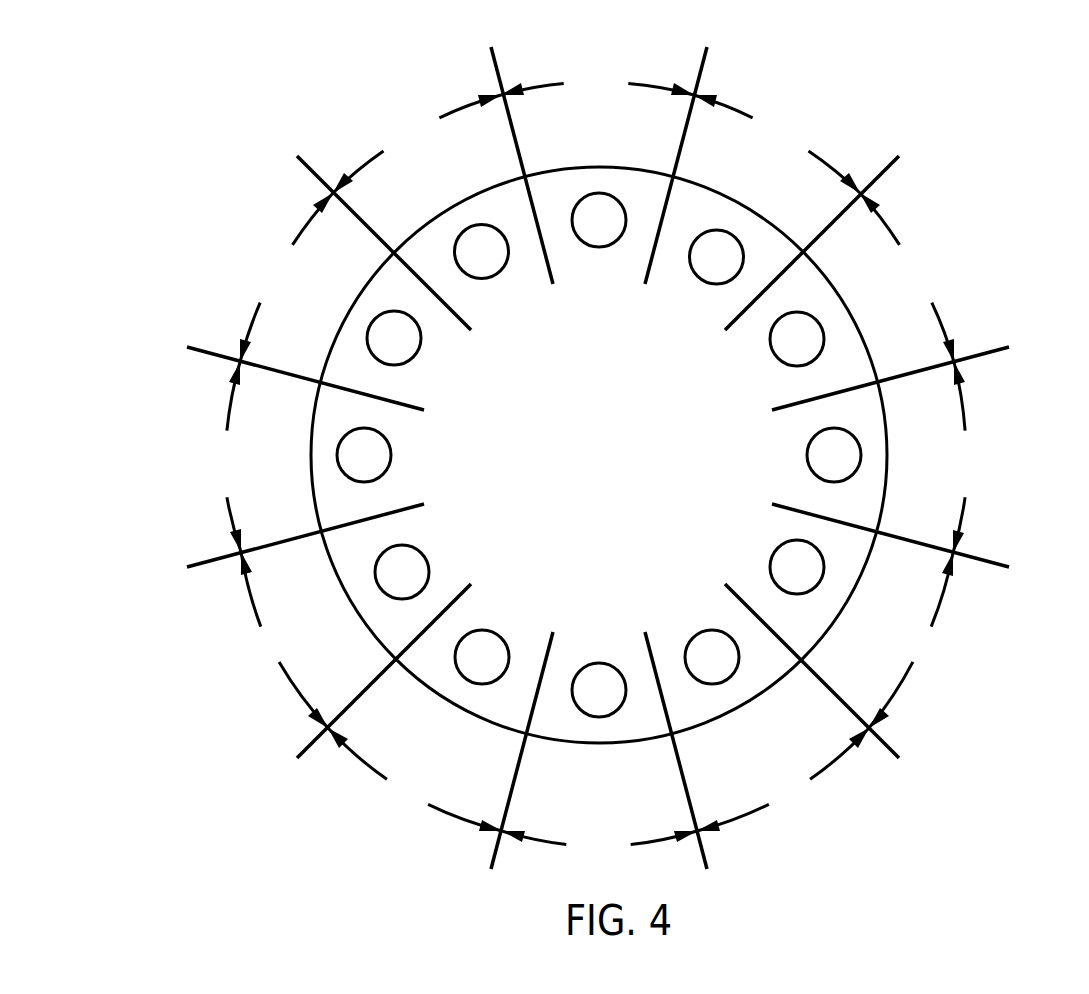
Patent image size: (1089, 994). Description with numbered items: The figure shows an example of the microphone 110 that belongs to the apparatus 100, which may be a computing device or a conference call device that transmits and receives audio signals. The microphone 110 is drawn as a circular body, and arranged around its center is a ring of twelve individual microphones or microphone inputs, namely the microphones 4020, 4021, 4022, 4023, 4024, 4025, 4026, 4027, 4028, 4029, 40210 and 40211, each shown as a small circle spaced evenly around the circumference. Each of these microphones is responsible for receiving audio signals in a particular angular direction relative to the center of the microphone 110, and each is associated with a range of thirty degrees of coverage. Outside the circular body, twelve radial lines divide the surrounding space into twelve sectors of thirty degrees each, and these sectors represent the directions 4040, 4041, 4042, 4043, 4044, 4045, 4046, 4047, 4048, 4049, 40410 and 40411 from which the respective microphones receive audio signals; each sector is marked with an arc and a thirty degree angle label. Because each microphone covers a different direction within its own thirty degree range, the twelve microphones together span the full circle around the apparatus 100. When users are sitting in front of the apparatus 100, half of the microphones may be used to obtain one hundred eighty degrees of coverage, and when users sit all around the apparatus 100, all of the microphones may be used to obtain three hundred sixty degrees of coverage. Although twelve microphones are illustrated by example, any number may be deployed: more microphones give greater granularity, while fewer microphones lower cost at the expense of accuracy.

The microphone 110 is at (66, 92).
The apparatus 100 is at (727, 197).
The microphone 4020 is at (492, 276).
The microphone 4021 is at (599, 248).
The microphone 4022 is at (707, 281).
The microphone 4023 is at (770, 346).
The microphone 4024 is at (807, 455).
The microphone 4025 is at (775, 545).
The microphone 4026 is at (705, 631).
The microphone 4027 is at (599, 663).
The microphone 4028 is at (489, 632).
The microphone 4029 is at (428, 550).
The microphone 40210 is at (391, 455).
The microphone 40211 is at (420, 348).
The direction 4040 is at (390, 147).
The direction 4041 is at (626, 83).
The direction 4042 is at (820, 158).
The direction 4043 is at (930, 294).
The direction 4044 is at (966, 427).
The direction 4045 is at (938, 610).
The direction 4046 is at (822, 771).
The direction 4047 is at (663, 840).
The direction 4048 is at (373, 772).
The direction 4049 is at (256, 610).
The direction 40410 is at (226, 486).
The direction 40411 is at (254, 318).